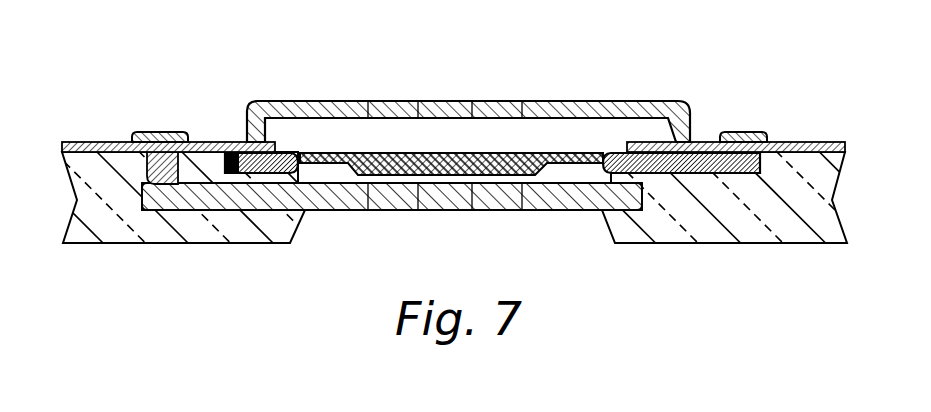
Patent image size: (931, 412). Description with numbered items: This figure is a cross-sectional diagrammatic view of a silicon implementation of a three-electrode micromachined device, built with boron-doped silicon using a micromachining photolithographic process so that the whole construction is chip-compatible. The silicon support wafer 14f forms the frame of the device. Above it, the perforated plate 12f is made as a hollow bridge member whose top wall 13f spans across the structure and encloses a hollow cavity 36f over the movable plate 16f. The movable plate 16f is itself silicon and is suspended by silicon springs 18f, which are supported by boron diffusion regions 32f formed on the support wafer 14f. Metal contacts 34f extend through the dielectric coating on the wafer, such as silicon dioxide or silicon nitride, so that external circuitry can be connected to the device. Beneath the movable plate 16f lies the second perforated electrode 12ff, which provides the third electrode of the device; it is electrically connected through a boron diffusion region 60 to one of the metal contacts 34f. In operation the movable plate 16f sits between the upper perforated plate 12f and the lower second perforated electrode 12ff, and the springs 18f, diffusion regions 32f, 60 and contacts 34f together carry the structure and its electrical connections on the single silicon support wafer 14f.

The perforated plate 12f is at (398, 101).
The second perforated electrode 12ff is at (512, 211).
The lid wall section 13f is at (470, 101).
The support wafer 14f is at (723, 244).
The movable plate 16f is at (525, 153).
The springs 18f is at (320, 158).
The boron diffusion regions 32f is at (225, 142).
The metal contacts 34f is at (162, 132).
The hollow cavity 36f is at (454, 133).
The boron diffusion region 60 is at (120, 146).